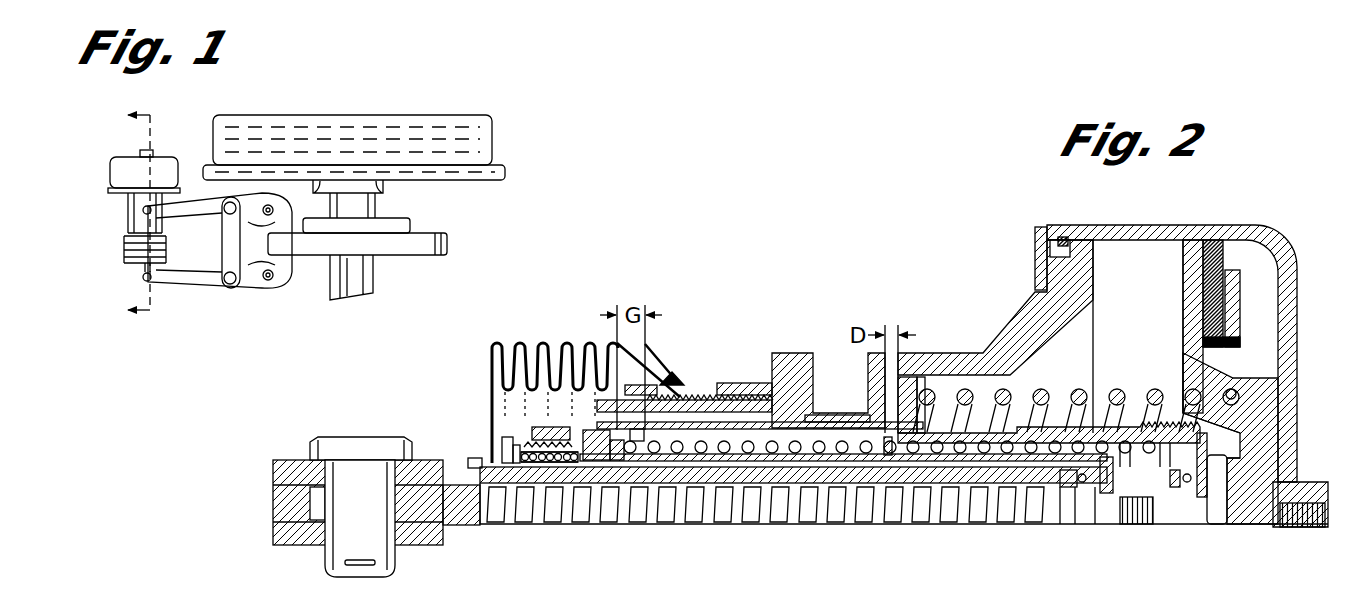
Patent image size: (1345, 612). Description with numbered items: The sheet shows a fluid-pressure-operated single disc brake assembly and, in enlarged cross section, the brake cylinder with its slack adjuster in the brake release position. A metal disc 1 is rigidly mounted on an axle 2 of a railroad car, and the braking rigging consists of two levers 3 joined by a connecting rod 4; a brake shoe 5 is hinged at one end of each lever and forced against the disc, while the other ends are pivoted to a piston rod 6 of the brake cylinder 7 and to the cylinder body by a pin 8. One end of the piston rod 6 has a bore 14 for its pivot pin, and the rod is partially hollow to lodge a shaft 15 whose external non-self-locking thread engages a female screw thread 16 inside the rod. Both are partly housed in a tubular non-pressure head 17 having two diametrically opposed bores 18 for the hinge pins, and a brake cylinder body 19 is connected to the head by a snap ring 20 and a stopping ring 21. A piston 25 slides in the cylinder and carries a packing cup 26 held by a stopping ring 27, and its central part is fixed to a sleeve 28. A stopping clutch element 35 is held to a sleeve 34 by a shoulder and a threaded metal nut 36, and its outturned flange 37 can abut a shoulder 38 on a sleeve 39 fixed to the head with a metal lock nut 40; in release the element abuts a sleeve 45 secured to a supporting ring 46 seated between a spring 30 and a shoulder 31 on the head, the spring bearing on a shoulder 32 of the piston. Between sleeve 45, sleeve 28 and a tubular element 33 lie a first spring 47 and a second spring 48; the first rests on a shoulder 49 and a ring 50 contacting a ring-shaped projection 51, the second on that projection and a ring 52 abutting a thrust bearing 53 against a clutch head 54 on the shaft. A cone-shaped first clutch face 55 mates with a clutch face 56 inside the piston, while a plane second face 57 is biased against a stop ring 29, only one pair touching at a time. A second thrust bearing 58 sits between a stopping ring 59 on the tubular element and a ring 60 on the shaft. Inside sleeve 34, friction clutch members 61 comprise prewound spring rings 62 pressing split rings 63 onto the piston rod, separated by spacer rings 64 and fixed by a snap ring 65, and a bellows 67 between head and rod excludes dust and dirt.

In FIG. 1, the metal disc 1 is at (408, 244).
In FIG. 1, the axle 2 is at (383, 287).
In FIG. 1, the levers 3 is at (202, 232).
In FIG. 2, the levers 3 is at (298, 466).
In FIG. 1, the connecting rod 4 is at (235, 255).
In FIG. 1, the brake shoe 5 is at (276, 213).
In FIG. 1, the piston rod 6 is at (143, 268).
In FIG. 2, the piston rod 6 is at (447, 503).
In FIG. 1, the brake cylinder 7 is at (106, 183).
In FIG. 2, the brake cylinder 7 is at (1206, 224).
In FIG. 1, the pin 8 is at (143, 213).
In FIG. 2, the pin 8 is at (343, 446).
In FIG. 2, the bore 14 is at (322, 505).
In FIG. 2, the shaft 15 is at (806, 508).
In FIG. 2, the female screw thread 16 is at (985, 478).
In FIG. 2, the non-pressure head 17 is at (975, 366).
In FIG. 2, the bores 18 is at (818, 355).
In FIG. 2, the brake cylinder body 19 is at (1110, 232).
In FIG. 2, the snap ring 20 is at (1064, 237).
In FIG. 2, the stopping ring 21 is at (1035, 270).
In FIG. 2, the piston 25 is at (1258, 400).
In FIG. 2, the packing cup 26 is at (1240, 250).
In FIG. 2, the stopping ring 27 is at (1240, 320).
In FIG. 2, the sleeve 28 is at (1100, 428).
In FIG. 2, the stop ring 29 is at (1210, 440).
In FIG. 2, the spring 30 is at (1077, 392).
In FIG. 2, the shoulder 31 is at (925, 400).
In FIG. 2, the shoulder 32 is at (1236, 393).
In FIG. 2, the tubular element 33 is at (828, 462).
In FIG. 2, the sleeve 34 is at (620, 464).
In FIG. 2, the stopping clutch element 35 is at (590, 431).
In FIG. 2, the threaded metal nut 36 is at (550, 428).
In FIG. 2, the outturned flange 37 is at (704, 400).
In FIG. 2, the shoulder 38 is at (641, 385).
In FIG. 2, the sleeve 39 is at (736, 398).
In FIG. 2, the metal lock nut 40 is at (672, 380).
In FIG. 2, the sleeve 45 is at (758, 420).
In FIG. 2, the supporting ring 46 is at (908, 388).
In FIG. 2, the first spring 47 is at (763, 477).
In FIG. 2, the second spring 48 is at (931, 453).
In FIG. 2, the shoulder 49 is at (640, 442).
In FIG. 2, the ring 50 is at (866, 418).
In FIG. 2, the ring-shaped projection 51 is at (888, 455).
In FIG. 2, the ring 52 is at (1145, 505).
In FIG. 2, the thrust bearing 53 is at (1200, 490).
In FIG. 2, the clutch head 54 is at (1290, 505).
In FIG. 2, the first clutch face 55 is at (1225, 478).
In FIG. 2, the clutch face 56 is at (1242, 463).
In FIG. 2, the second face 57 is at (1212, 500).
In FIG. 2, the second thrust bearing 58 is at (1104, 494).
In FIG. 2, the stopping ring 59 is at (1086, 482).
In FIG. 2, the ring 60 is at (1066, 488).
In FIG. 2, the friction clutch members 61 is at (516, 466).
In FIG. 2, the spring ring 62 is at (540, 438).
In FIG. 2, the split ring 63 is at (536, 465).
In FIG. 2, the spacer rings 64 is at (528, 462).
In FIG. 2, the snap ring 65 is at (494, 458).
In FIG. 2, the bellows 67 is at (499, 346).